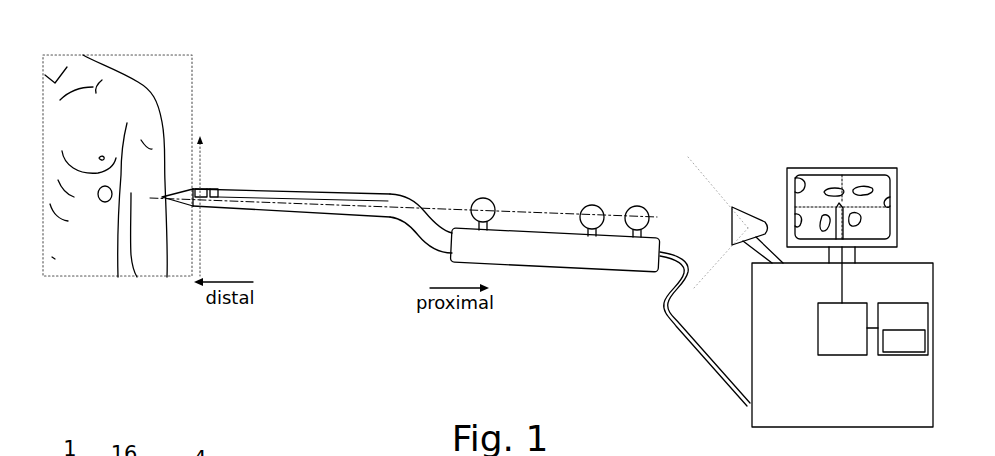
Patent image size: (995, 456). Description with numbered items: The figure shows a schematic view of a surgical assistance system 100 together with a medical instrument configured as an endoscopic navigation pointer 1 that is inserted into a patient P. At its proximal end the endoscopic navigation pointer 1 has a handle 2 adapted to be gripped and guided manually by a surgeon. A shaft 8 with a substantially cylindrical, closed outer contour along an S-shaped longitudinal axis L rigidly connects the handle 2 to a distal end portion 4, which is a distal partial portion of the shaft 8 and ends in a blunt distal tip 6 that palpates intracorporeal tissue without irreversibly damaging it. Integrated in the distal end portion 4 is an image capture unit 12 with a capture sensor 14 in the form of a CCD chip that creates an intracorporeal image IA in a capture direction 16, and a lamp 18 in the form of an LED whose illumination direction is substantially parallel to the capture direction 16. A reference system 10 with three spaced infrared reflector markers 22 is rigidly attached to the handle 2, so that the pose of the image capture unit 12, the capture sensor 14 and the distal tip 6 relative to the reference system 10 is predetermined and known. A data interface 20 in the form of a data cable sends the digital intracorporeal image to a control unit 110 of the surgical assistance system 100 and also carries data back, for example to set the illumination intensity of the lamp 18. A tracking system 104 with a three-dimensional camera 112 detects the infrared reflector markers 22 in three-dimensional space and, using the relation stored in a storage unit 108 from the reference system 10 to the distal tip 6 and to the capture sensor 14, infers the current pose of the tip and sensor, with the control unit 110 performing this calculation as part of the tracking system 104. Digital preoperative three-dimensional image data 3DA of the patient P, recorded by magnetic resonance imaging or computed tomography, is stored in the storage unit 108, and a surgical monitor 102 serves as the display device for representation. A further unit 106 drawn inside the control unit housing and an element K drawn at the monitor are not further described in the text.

The endoscopic navigation pointer 1 is at (321, 159).
The handle 2 is at (548, 259).
The distal end portion 4 is at (204, 227).
The distal tip 6 is at (176, 205).
The shaft 8 is at (397, 210).
The reference system 10 is at (532, 164).
The image capture unit 12 is at (220, 212).
The capture sensor 14 is at (207, 189).
The capture direction 16 is at (198, 190).
The lamp 18 is at (216, 188).
The data interface 20 is at (688, 343).
The infrared reflector markers 22 is at (492, 201).
The surgical assistance system 100 is at (663, 146).
The surgical monitor 102 is at (800, 176).
The tracking system 104 is at (740, 196).
The memory unit 106 is at (886, 327).
The storage unit 108 is at (904, 342).
The control unit 110 is at (826, 339).
The 3D camera 112 is at (737, 237).
The patient P is at (137, 108).
The longitudinal axis L is at (317, 207).
The intracorporeal image IA is at (812, 205).
The screen K is at (880, 163).
The 3D image data 3DA is at (882, 225).